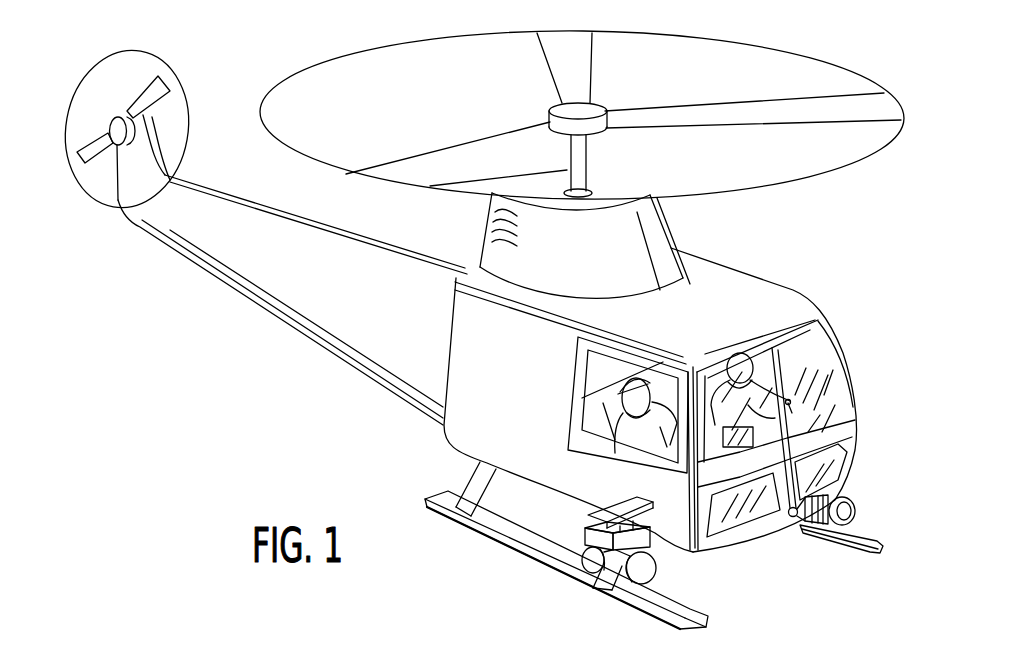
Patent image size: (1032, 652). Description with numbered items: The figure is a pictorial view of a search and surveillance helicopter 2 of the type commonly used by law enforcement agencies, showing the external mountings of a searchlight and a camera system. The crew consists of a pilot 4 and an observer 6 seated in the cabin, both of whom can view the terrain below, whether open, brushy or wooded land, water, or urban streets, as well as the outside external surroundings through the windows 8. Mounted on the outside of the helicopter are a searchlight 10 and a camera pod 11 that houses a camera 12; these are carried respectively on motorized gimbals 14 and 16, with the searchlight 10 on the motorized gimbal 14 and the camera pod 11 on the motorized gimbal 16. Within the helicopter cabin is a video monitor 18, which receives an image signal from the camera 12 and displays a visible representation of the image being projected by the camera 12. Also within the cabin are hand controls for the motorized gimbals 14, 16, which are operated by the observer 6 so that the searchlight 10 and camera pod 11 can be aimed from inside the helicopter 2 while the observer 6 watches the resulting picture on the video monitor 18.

The search and surveillance helicopter 2 is at (250, 343).
The pilot 4 is at (773, 367).
The observer 6 is at (603, 405).
The windows 8 is at (665, 383).
The searchlight 10 is at (643, 573).
The camera pod 11 is at (839, 493).
The camera 12 is at (857, 510).
The motorized gimbal 14 is at (797, 518).
The motorized gimbal 16 is at (600, 508).
The video monitor 18 is at (721, 420).